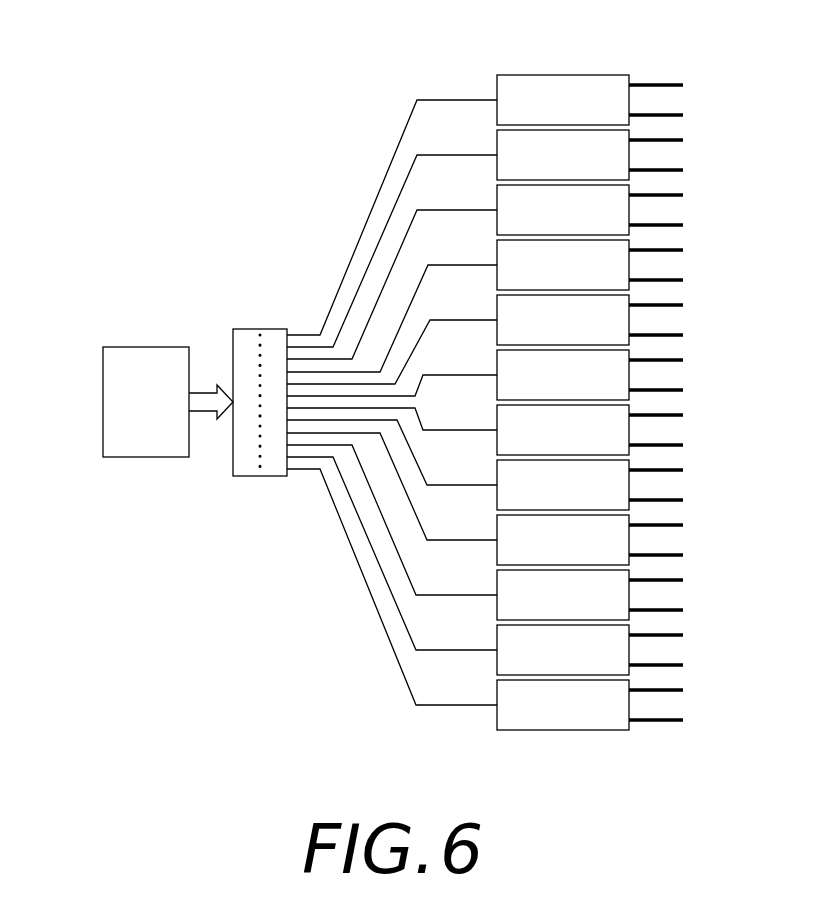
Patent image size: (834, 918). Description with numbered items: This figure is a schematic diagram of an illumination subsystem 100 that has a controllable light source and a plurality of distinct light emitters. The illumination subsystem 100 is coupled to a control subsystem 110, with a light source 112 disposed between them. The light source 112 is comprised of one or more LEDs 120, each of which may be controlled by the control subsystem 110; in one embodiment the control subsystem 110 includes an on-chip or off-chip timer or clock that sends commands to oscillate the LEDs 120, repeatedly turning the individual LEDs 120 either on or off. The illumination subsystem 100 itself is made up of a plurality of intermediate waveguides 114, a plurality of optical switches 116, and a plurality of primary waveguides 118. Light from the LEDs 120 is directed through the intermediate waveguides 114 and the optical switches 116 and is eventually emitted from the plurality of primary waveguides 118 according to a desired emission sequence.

The illumination subsystem 100 is at (280, 112).
The control subsystem 110 is at (140, 458).
The light source 112 is at (223, 402).
The intermediate waveguides 114 is at (457, 98).
The optical switches 116 is at (563, 731).
The primary waveguides 118 is at (672, 413).
The LEDs 120 is at (262, 333).